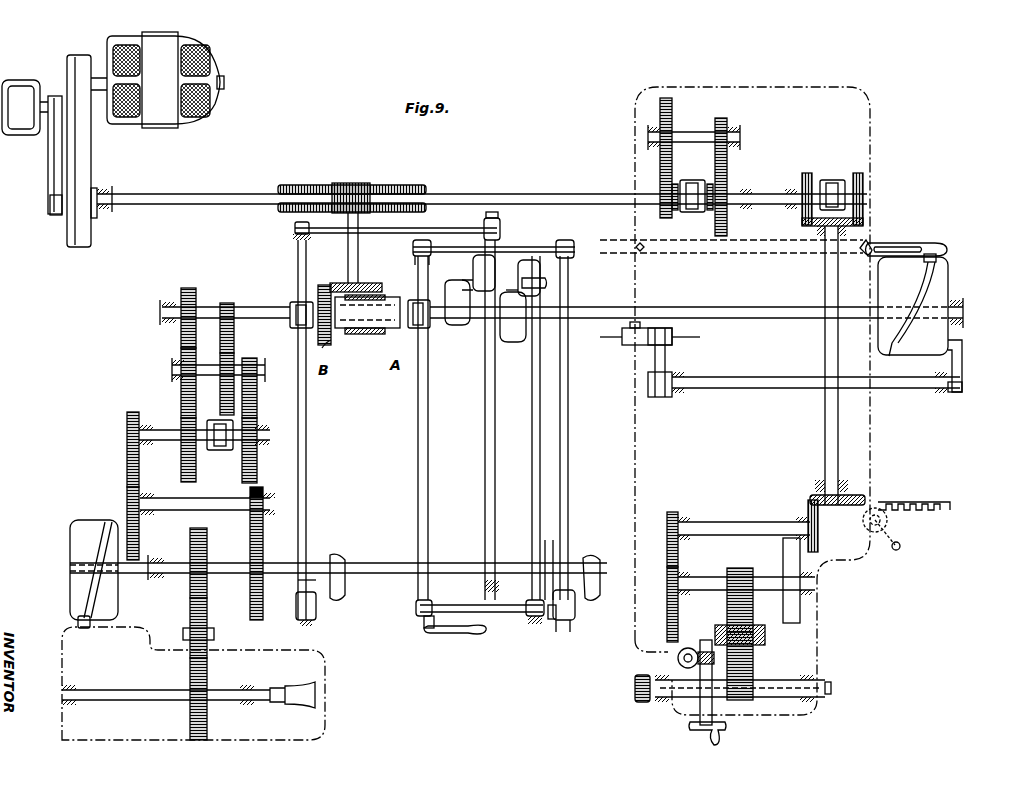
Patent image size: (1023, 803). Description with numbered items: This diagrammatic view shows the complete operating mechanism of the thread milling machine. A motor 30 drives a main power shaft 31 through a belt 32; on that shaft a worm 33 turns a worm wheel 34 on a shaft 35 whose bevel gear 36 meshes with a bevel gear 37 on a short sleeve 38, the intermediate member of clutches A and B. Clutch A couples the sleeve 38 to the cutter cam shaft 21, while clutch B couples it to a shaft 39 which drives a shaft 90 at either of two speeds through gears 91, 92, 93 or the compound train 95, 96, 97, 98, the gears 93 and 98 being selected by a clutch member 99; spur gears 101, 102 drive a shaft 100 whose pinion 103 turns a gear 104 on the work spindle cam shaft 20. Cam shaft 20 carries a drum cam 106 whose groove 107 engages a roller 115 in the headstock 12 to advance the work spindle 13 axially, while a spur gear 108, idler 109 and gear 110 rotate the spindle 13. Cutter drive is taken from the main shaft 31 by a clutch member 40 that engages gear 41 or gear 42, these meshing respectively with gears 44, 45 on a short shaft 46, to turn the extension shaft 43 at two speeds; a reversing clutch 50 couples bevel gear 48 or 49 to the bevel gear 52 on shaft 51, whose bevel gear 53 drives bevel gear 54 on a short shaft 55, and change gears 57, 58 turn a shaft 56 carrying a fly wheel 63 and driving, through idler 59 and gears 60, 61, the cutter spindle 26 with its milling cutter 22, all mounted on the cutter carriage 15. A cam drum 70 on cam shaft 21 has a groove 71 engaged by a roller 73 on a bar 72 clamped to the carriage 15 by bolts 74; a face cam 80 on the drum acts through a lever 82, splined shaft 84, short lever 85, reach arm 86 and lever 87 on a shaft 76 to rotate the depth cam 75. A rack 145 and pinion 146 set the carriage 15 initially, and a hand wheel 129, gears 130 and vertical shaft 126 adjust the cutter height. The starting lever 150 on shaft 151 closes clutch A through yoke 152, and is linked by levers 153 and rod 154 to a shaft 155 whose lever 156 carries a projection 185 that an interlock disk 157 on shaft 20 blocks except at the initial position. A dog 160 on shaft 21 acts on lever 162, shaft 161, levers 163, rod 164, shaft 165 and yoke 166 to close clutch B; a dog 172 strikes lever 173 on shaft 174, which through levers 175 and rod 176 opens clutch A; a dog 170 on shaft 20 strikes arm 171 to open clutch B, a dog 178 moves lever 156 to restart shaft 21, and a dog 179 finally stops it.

The headstock 12 is at (328, 651).
The work rotating spindle 13 is at (218, 690).
The cutter carriage 15 is at (880, 456).
The main cam shaft 20 is at (375, 563).
The main cam shaft 21 is at (580, 307).
The rotatable milling cutter 22 is at (642, 702).
The cutter spindle 26 is at (790, 697).
The motor 30 is at (204, 50).
The main power shaft 31 is at (207, 192).
The driving connection 32 is at (86, 134).
The main driving worm 33 is at (350, 183).
The worm wheel 34 is at (380, 186).
The shaft 35 is at (340, 288).
The bevel gear 36 is at (324, 285).
The bevel gear 37 is at (338, 340).
The short sleeve 38 is at (380, 334).
The shaft 39 is at (240, 307).
The central clutch member 40 is at (688, 180).
The gear 41 is at (670, 213).
The gear 42 is at (727, 224).
The extension shaft 43 is at (750, 189).
The gear 44 is at (666, 98).
The gear 45 is at (720, 118).
The short drive shaft 46 is at (688, 132).
The bevel gear 48 is at (806, 173).
The bevel gear 49 is at (858, 173).
The central clutch member 50 is at (832, 180).
The shaft 51 is at (825, 341).
The bevel gear 52 is at (815, 226).
The bevel gear 53 is at (818, 495).
The bevel gear 54 is at (808, 508).
The short shaft 55 is at (715, 526).
The shaft 56 is at (706, 577).
The spur gear 57 is at (672, 512).
The spur gear 58 is at (667, 580).
The idler gear 59 is at (765, 620).
The spur gear 60 is at (740, 568).
The spur gear 61 is at (750, 700).
The fly wheel 63 is at (800, 615).
The cam drum 70 is at (948, 288).
The cam groove 71 is at (889, 356).
The connecting rod 72 is at (917, 243).
The roller 73 is at (936, 257).
The bolts 74 is at (872, 244).
The small cam 75 is at (635, 322).
The shaft 76 is at (690, 338).
The face cam 80 is at (962, 335).
The lever 82 is at (962, 368).
The oscillating shaft 84 is at (780, 388).
The short lever 85 is at (650, 397).
The reach arm 86 is at (655, 360).
The lever 87 is at (672, 332).
The shaft 90 is at (170, 442).
The gear 91 is at (182, 290).
The idler 92 is at (181, 355).
The gear 93 is at (181, 405).
The gear 95 is at (226, 303).
The compound gear 96 is at (220, 350).
The compound gear 97 is at (252, 358).
The gear 98 is at (257, 412).
The clutch member 99 is at (220, 450).
The shaft 100 is at (200, 510).
The spur gear 101 is at (127, 415).
The spur gear 102 is at (127, 490).
The pinion 103 is at (260, 487).
The gear 104 is at (263, 545).
The drum cam 106 is at (70, 537).
The cam groove 107 is at (103, 520).
The spur gear 108 is at (207, 548).
The idler 109 is at (190, 618).
The gear 110 is at (190, 675).
The pin or roller 115 is at (78, 618).
The rotatable shaft 126 is at (678, 660).
The hand wheel 129 is at (700, 738).
The gears 130 is at (706, 640).
The rack 145 is at (918, 510).
The pinion 146 is at (865, 545).
The starting lever 150 is at (442, 634).
The oscillating shaft 151 is at (428, 484).
The clutch operating yoke member 152 is at (428, 328).
The levers 153 is at (413, 245).
The connecting rod 154 is at (498, 240).
The second oscillating shaft 155 is at (568, 434).
The lever 156 is at (575, 615).
The disk cam 157 is at (553, 540).
The clutch operating dog 160 is at (478, 325).
The oscillatory shaft 161 is at (485, 430).
The lever 162 is at (482, 258).
The levers 163 is at (295, 229).
The connecting rod 164 is at (428, 228).
The shaft 165 is at (306, 431).
The yoke 166 is at (290, 310).
The cam dog 170 is at (345, 598).
The clutch operating arm 171 is at (296, 595).
The dog 172 is at (528, 260).
The lever 173 is at (545, 283).
The oscillating shaft 174 is at (532, 415).
The levers 175 is at (432, 604).
The connecting rod 176 is at (500, 612).
The clutch operating dog 178 is at (592, 590).
The dog 179 is at (515, 342).
The projection 185 is at (552, 620).